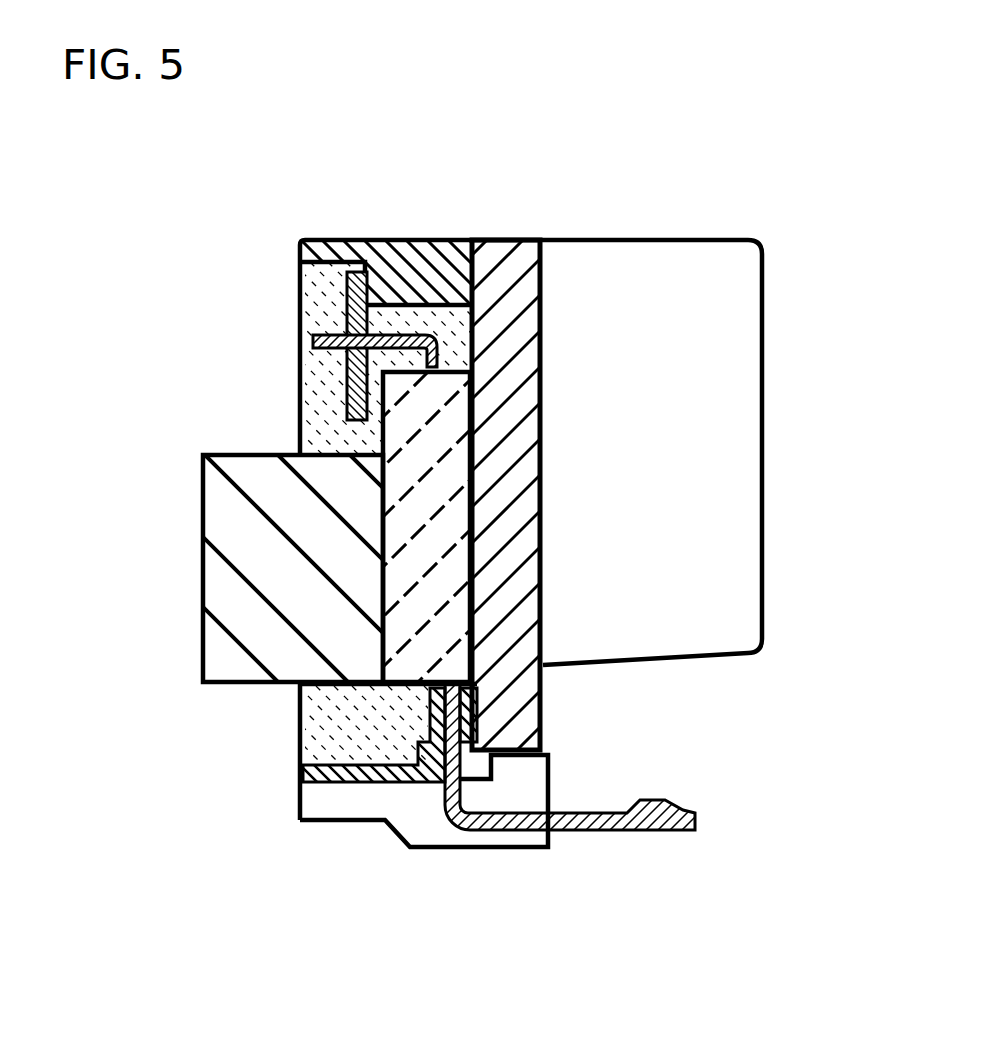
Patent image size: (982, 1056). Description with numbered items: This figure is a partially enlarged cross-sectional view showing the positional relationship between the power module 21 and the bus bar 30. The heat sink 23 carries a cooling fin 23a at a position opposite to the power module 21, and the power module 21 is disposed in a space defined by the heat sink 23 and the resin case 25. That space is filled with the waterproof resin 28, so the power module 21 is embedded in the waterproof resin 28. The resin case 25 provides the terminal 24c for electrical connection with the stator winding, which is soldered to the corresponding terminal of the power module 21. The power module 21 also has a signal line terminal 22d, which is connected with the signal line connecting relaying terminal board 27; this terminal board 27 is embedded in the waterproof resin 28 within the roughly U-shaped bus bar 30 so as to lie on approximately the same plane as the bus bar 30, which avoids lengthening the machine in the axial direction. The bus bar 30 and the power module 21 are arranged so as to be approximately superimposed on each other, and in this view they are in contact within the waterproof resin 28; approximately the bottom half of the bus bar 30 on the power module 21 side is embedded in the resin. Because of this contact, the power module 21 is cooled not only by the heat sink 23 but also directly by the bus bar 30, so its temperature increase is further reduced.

The power module 21 is at (432, 568).
The signal line terminal 22d is at (405, 358).
The heat sink 23 is at (507, 712).
The cooling fin 23a is at (690, 575).
The terminal 24c is at (612, 830).
The resin case 25 is at (385, 783).
The signal line connecting relaying terminal board 27 is at (347, 393).
The waterproof resin 28 is at (353, 733).
The bus bar 30 is at (248, 587).